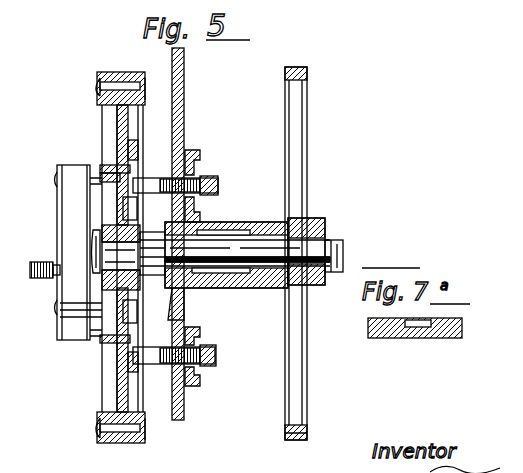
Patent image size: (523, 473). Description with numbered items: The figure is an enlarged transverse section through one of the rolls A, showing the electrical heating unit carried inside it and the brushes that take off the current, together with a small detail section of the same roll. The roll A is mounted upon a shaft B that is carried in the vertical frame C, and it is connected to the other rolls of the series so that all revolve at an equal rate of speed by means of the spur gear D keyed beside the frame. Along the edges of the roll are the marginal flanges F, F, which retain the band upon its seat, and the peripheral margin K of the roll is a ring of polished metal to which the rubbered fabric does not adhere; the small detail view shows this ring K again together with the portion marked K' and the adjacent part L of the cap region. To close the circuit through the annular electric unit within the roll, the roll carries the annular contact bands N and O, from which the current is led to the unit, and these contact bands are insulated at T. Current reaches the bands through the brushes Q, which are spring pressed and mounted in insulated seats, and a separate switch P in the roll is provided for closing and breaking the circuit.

In FIG. 5, the roll A is at (105, 122).
In FIG. 5, the shaft B is at (208, 250).
In FIG. 5, the vertical frame C is at (184, 97).
In FIG. 5, the spur gear D is at (307, 72).
In FIG. 5, the marginal flange F is at (100, 75).
In FIG. 5, the peripheral margin K is at (118, 248).
In FIG. 7A, the peripheral margin K is at (415, 341).
In FIG. 7A, the pin slot K' is at (422, 342).
In FIG. 5, the cap flange L is at (145, 80).
In FIG. 5, the annular contact band N is at (138, 158).
In FIG. 5, the annular contact band O is at (130, 190).
In FIG. 5, the switch P is at (60, 290).
In FIG. 5, the brush Q is at (127, 182).
In FIG. 5, the insulation T is at (128, 148).